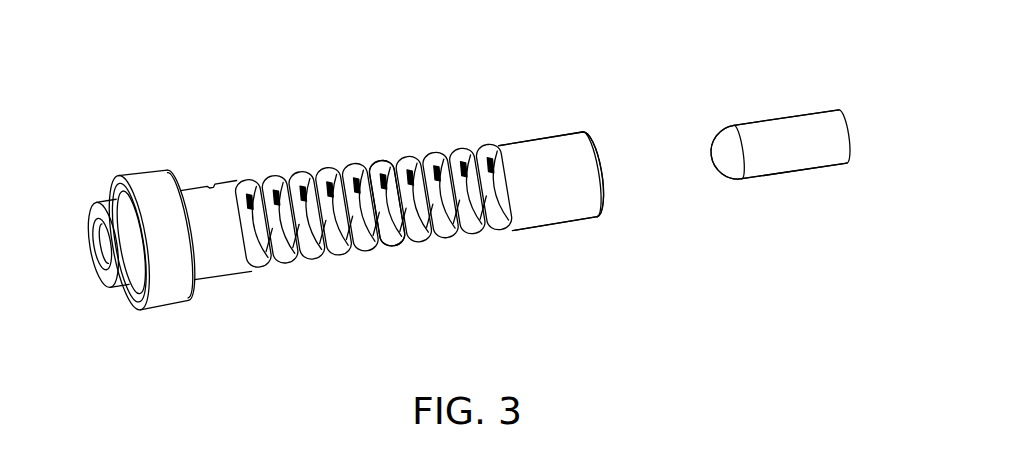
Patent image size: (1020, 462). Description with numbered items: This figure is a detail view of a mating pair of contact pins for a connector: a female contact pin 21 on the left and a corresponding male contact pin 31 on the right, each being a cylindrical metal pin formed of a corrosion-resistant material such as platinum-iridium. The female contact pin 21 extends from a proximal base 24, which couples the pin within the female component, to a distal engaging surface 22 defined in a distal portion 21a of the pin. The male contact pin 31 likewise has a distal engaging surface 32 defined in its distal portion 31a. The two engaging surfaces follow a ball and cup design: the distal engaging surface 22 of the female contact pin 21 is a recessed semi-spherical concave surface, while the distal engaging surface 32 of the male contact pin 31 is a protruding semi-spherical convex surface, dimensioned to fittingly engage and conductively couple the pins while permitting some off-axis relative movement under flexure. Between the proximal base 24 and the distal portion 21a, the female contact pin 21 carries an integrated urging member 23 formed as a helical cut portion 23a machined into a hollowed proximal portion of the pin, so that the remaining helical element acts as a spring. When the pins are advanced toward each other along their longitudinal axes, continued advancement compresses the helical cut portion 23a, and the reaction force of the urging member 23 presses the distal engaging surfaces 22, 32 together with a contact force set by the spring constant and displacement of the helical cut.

The female contact pin 21 is at (208, 262).
The distal portion of female contact pin 21a is at (537, 270).
The distal engaging surface 22 is at (608, 185).
The urging member 23 is at (498, 112).
The helical cut portion 23a is at (362, 250).
The proximal base 24 is at (155, 182).
The male contact pin 31 is at (748, 122).
The distal portion of male contact pin 31a is at (733, 215).
The distal engaging surface 32 is at (722, 163).